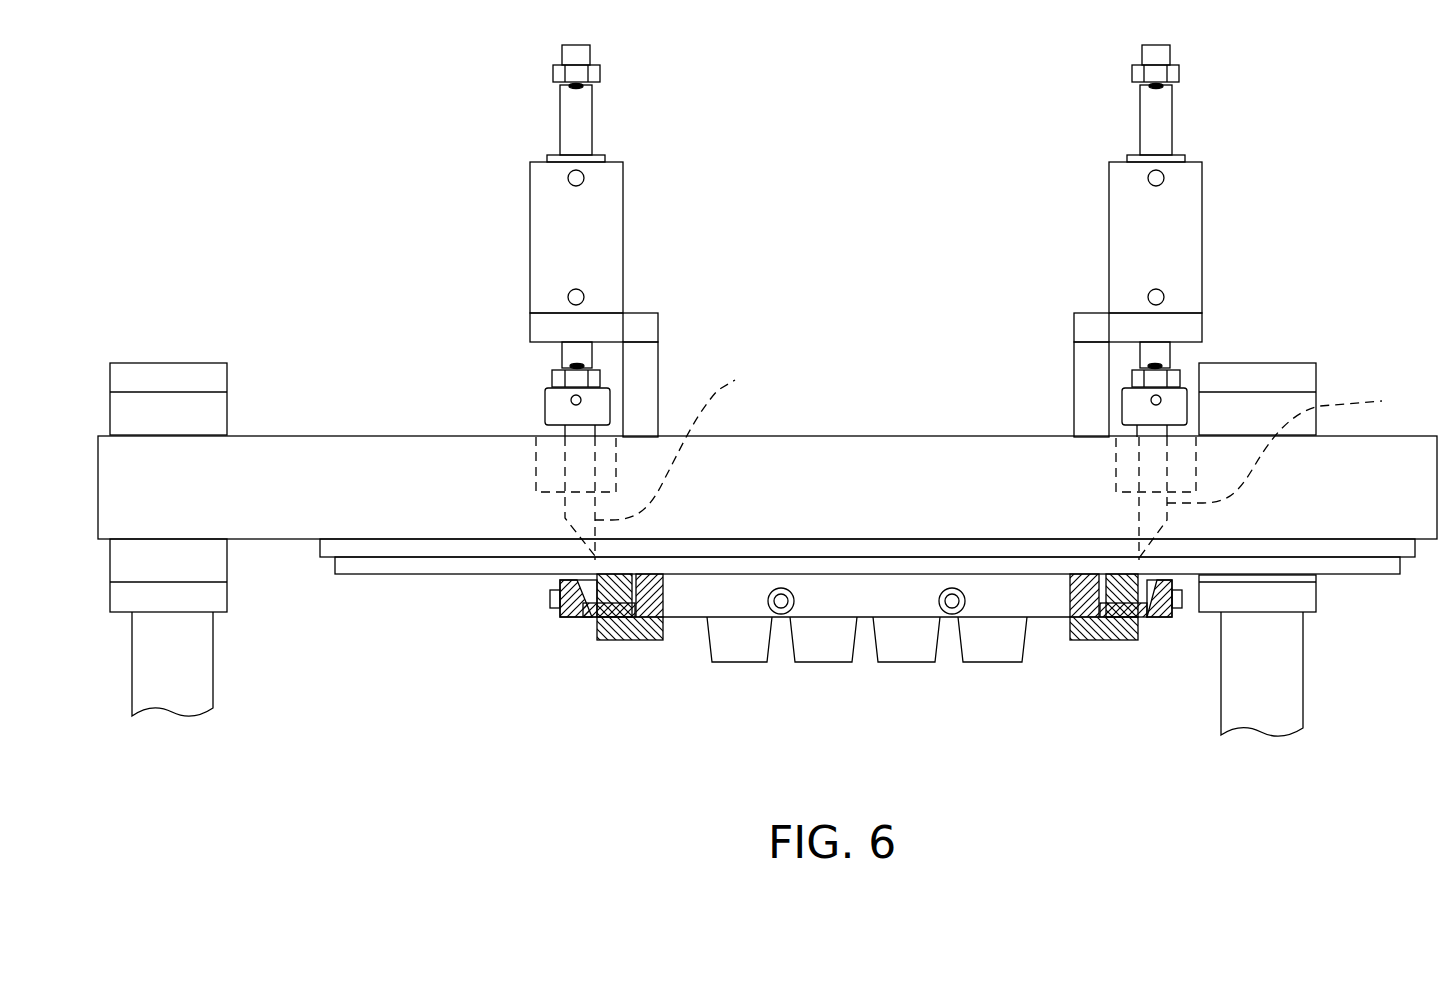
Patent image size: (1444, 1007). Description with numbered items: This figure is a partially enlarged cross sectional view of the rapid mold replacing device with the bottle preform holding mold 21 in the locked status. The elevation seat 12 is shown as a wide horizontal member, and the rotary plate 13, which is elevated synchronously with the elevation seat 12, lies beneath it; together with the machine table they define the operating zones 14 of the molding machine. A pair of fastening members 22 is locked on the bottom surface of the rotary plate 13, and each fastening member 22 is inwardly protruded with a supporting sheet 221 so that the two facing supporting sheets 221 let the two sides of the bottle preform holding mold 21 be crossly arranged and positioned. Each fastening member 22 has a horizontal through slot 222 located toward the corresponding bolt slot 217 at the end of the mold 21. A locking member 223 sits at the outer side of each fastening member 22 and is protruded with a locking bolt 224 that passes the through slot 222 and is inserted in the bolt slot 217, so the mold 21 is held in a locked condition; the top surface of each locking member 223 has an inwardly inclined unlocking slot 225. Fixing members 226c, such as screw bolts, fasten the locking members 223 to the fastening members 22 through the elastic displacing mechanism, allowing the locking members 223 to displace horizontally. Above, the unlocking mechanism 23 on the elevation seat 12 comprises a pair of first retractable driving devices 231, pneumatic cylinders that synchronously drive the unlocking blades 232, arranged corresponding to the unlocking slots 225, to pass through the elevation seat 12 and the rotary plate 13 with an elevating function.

The elevation seat 12 is at (392, 407).
The rotary plate 13 is at (403, 557).
The operating zones 14 is at (767, 489).
The bottle preform holding mold 21 is at (902, 608).
The fastening members 22 is at (815, 670).
The unlocking mechanism 23 is at (983, 301).
The first retractable driving device 231 is at (623, 217).
The unlocking blades 232 is at (986, 463).
The bolt slot 217 is at (647, 640).
The supporting sheets 221 is at (637, 640).
The through slot 222 is at (607, 640).
The fixing members 226c is at (548, 608).
The locking member 223 is at (1158, 620).
The locking bolt 224 is at (1105, 640).
The unlocking slot 225 is at (1138, 640).